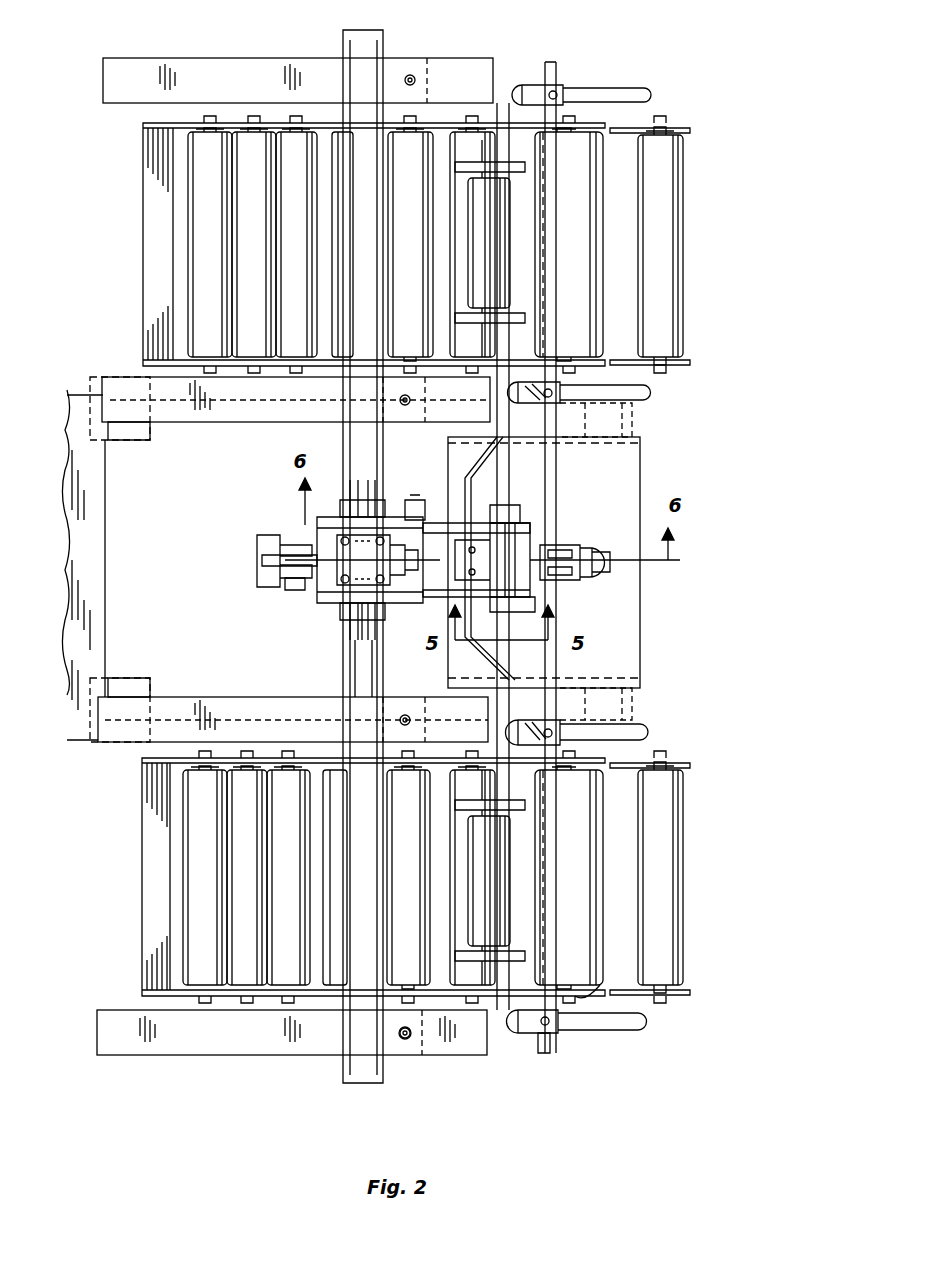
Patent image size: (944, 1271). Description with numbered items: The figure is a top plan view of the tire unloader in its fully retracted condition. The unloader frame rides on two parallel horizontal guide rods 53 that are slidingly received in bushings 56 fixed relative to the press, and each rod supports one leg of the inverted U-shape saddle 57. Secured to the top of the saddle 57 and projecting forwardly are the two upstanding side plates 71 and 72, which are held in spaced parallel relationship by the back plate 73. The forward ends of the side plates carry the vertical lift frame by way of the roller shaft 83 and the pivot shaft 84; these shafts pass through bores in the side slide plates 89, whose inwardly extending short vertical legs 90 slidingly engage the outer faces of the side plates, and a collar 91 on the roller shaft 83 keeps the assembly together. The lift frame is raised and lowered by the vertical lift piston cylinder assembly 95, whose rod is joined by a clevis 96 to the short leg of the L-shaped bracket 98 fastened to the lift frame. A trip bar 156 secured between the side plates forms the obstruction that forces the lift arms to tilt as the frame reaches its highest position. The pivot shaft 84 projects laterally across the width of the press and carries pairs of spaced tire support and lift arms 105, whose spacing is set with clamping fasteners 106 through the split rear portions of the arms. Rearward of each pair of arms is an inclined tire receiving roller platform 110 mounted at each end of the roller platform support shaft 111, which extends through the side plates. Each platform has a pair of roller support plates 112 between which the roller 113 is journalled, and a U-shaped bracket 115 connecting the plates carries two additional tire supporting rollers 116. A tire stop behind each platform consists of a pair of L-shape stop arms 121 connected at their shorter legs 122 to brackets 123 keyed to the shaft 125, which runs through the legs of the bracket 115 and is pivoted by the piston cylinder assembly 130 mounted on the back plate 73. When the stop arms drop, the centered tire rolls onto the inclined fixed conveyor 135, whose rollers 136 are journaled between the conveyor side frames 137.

The pivot shaft 84 is at (383, 36).
The tire support and lift arms 105 is at (115, 82).
The inclined fixed conveyor 135 is at (363, 559).
The rollers 136 is at (190, 182).
The conveyor side frames 137 is at (143, 968).
The roller support plates 112 is at (460, 175).
The roller 113 is at (490, 245).
The tire supporting rollers 116 is at (598, 292).
The inclined tire receiving roller platform 110 is at (621, 536).
The roller platform support shaft 111 is at (518, 392).
The saddle 57 is at (640, 458).
The horizontal guide rods 53 is at (212, 422).
The bushings 56 is at (138, 440).
The short vertical legs 90 is at (317, 522).
The side slide plates 89 is at (340, 505).
The roller shaft 83 is at (355, 646).
The collar 91 is at (365, 640).
The trip bar 156 is at (420, 500).
The vertical lift piston cylinder assembly 95 is at (262, 540).
The L-shaped bracket 98 is at (262, 558).
The clevis 96 is at (287, 590).
The side plate 72 is at (518, 523).
The back plate 73 is at (530, 540).
The side plate 71 is at (535, 603).
The piston cylinder assembly 130 is at (610, 578).
The shorter legs 122 is at (518, 1022).
The L-shape stop arms 121 is at (628, 1030).
The brackets 123 is at (558, 1030).
The shaft 125 is at (545, 1053).
The U-shaped bracket 115 is at (585, 996).
The clamping fasteners 106 is at (405, 1040).